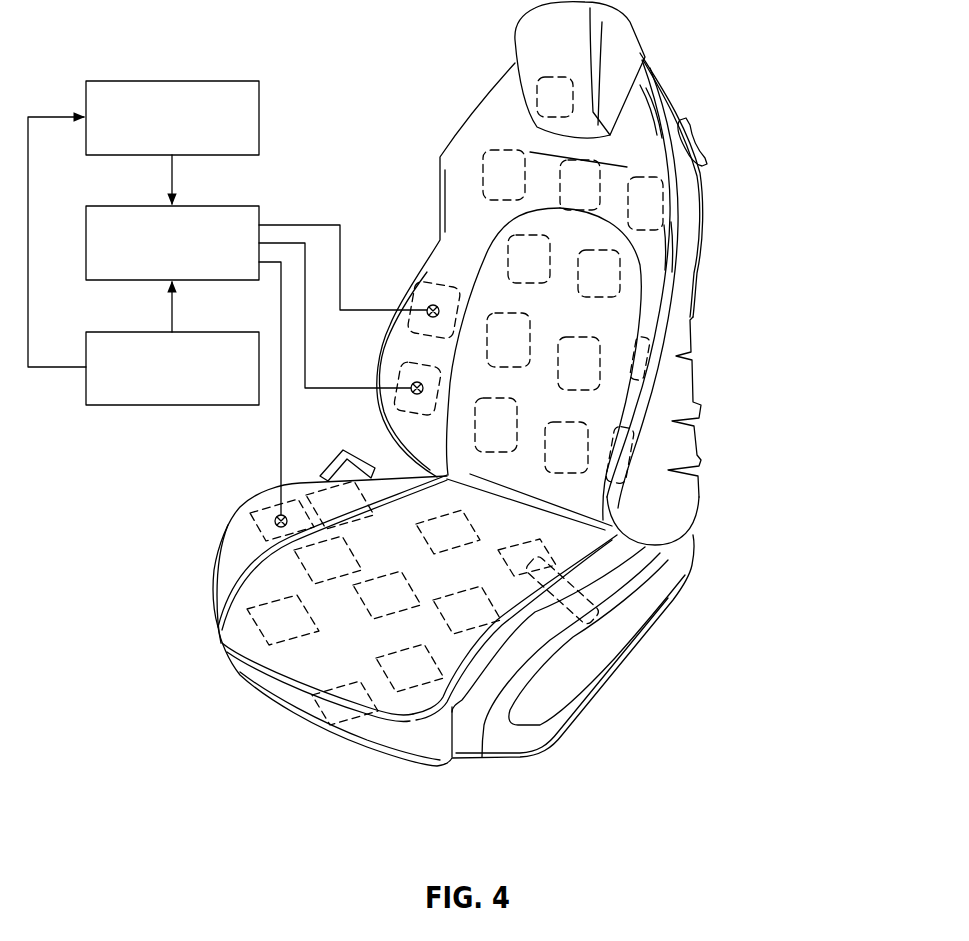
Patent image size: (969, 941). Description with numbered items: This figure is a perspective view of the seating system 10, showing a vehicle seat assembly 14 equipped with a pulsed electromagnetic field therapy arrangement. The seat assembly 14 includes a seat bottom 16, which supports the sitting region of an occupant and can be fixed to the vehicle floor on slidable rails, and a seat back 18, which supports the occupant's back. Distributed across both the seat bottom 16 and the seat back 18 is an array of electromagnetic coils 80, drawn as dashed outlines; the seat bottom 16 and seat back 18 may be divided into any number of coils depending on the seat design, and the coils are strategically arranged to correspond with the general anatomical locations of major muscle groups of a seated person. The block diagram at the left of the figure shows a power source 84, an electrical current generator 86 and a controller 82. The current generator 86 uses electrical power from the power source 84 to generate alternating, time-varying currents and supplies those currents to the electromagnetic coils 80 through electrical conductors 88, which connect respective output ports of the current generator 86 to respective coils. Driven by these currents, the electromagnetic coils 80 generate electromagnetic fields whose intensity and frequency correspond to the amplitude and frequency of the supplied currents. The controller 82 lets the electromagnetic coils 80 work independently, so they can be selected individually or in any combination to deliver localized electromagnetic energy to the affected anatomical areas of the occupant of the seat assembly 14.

The seating system 10 is at (299, 37).
The seat assembly 14 is at (485, 74).
The seat bottom 16 is at (342, 735).
The seat back 18 is at (650, 307).
The electromagnetic coils 80 is at (600, 363).
The controller 82 is at (115, 332).
The power source 84 is at (115, 80).
The electrical current generator 86 is at (115, 205).
The electrical conductors 88 is at (297, 224).